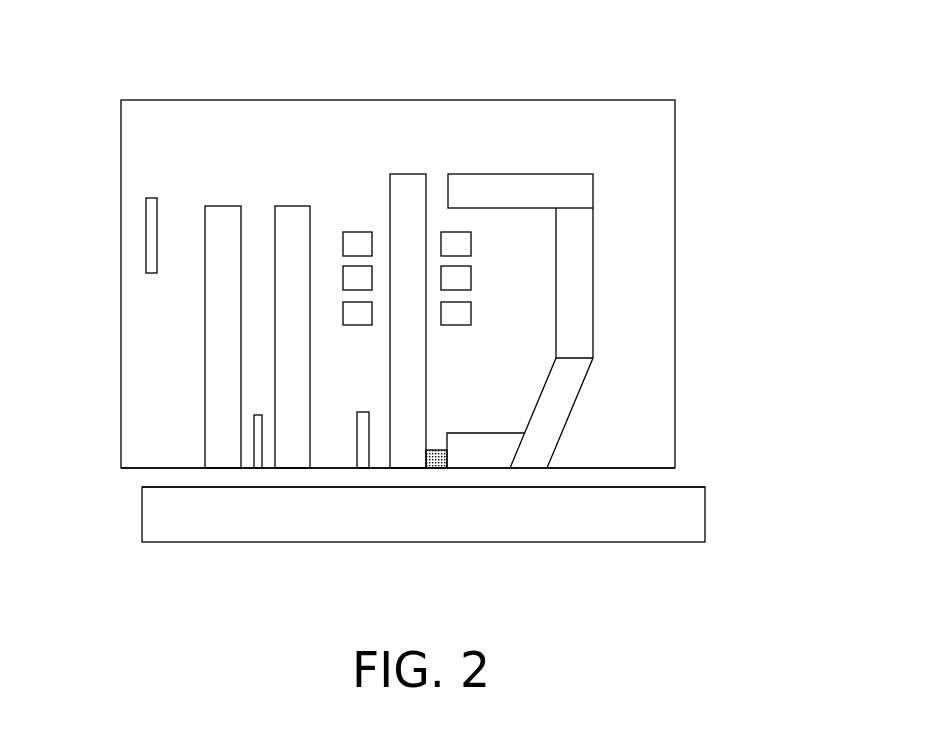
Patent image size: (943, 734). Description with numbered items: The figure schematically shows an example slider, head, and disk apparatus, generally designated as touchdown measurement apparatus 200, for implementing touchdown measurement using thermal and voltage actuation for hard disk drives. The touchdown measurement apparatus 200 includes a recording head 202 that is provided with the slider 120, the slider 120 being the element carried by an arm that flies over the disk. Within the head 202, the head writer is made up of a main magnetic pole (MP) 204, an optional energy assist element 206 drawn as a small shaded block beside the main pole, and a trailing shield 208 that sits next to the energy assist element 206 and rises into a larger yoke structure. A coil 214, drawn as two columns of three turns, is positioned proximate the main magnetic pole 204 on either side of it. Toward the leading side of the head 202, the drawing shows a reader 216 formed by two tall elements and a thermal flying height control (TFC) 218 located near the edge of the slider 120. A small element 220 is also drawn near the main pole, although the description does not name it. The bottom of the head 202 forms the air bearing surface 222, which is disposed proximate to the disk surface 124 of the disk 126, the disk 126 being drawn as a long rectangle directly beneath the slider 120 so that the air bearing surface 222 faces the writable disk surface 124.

The touchdown measurement apparatus 200 is at (413, 56).
The slider 120 is at (659, 124).
The recording head 202 is at (245, 142).
The thermal flying height control (TFC) 218 is at (152, 198).
The reader 216 is at (255, 195).
The coil 214 is at (349, 211).
The stud / heater 220 is at (361, 412).
The main magnetic pole (MP) 204 is at (408, 321).
The energy assist element 206 is at (443, 448).
The trailing shield 208 is at (486, 453).
The disk surface 124 is at (173, 485).
The air bearing surface 222 is at (667, 469).
The disk 126 is at (688, 519).